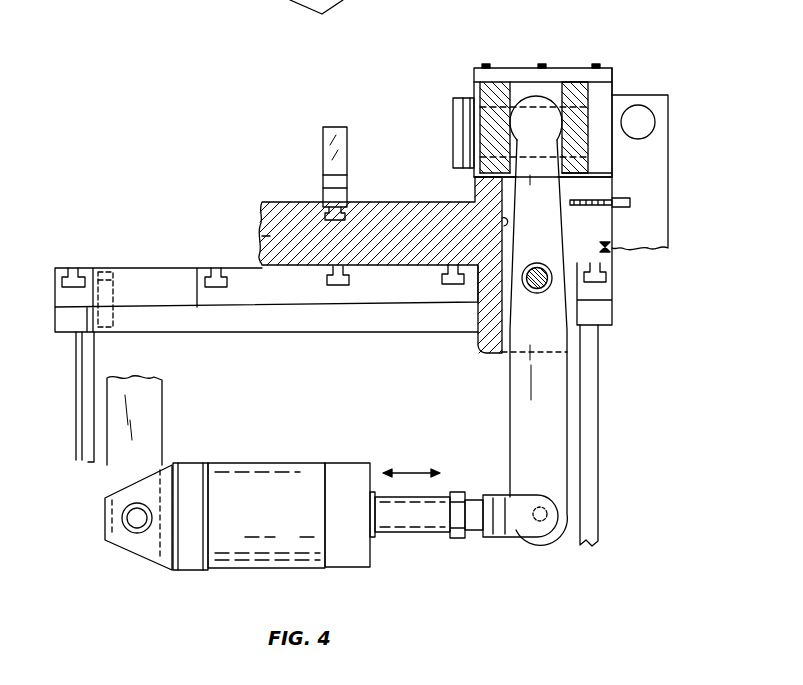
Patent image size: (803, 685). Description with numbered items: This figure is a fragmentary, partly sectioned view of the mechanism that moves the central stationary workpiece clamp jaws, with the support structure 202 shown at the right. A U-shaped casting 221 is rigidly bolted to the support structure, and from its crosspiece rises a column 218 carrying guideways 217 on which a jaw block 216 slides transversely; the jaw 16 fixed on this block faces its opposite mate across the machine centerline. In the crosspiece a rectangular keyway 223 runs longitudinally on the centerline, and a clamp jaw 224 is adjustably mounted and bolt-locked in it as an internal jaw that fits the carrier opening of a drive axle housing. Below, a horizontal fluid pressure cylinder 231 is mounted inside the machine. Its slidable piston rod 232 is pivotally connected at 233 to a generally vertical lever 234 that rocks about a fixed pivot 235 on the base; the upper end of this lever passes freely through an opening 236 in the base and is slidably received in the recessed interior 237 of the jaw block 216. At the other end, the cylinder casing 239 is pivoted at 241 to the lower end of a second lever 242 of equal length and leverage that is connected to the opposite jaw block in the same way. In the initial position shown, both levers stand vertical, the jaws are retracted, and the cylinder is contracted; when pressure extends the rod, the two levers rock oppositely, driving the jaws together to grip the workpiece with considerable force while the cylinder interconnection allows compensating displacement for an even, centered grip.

The jaw 16 is at (455, 126).
The base frame 202 is at (606, 248).
The jaw block 216 is at (590, 92).
The guideways 217 is at (604, 128).
The column 218 is at (576, 76).
The U-shaped casting 221 is at (393, 222).
The keyway 223 is at (262, 236).
The clamp jaw 224 is at (338, 168).
The fluid pressure cylinder 231 is at (288, 484).
The piston rod 232 is at (428, 531).
The pivotal connection 233 is at (542, 512).
The lever 234 is at (554, 428).
The fixed pivot 235 is at (546, 270).
The opening 236 is at (494, 228).
The recessed interior 237 is at (552, 82).
The casing 239 is at (193, 565).
The pivot 241 is at (136, 519).
The lever 242 is at (156, 417).